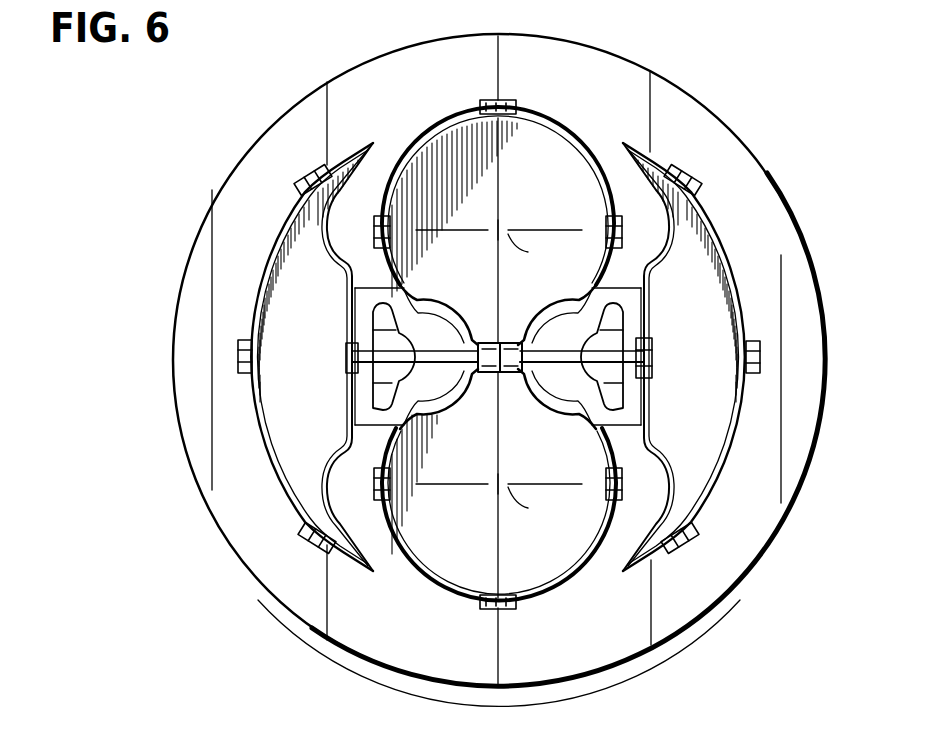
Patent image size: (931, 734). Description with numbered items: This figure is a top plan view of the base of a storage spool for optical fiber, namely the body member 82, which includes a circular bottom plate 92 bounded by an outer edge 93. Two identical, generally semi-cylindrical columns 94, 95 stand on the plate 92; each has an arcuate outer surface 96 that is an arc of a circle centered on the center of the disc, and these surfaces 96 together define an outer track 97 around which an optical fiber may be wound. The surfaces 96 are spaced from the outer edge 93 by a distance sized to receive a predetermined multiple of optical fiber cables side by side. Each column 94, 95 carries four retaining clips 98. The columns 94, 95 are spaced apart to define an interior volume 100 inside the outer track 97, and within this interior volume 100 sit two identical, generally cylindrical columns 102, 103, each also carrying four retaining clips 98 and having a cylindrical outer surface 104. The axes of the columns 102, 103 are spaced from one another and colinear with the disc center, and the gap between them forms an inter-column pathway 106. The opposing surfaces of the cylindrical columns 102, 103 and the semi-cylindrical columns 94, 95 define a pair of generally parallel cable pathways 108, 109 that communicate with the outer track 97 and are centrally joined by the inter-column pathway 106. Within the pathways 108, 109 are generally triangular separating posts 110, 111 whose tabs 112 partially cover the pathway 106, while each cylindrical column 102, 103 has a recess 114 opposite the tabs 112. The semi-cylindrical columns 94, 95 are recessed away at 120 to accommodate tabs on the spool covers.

The body member 82 is at (267, 130).
The circular bottom plate 92 is at (568, 48).
The outer edge 93 is at (242, 548).
The semi-cylindrical column 94 is at (284, 232).
The semi-cylindrical column 95 is at (740, 267).
The arcuate outer surface 96 is at (260, 458).
The outer track 97 is at (456, 84).
The retaining clip 98 is at (505, 112).
The interior volume 100 is at (468, 357).
The cylindrical column 102 is at (420, 552).
The cylindrical column 103 is at (400, 250).
The cylindrical outer surface 104 is at (568, 134).
The inter-column pathway 106 is at (535, 357).
The cable pathway 108 is at (375, 343).
The cable pathway 109 is at (622, 343).
The separating post 110 is at (352, 366).
The separating post 111 is at (652, 348).
The tab 112 is at (444, 334).
The recess 114 is at (430, 296).
The recess 120 is at (346, 262).